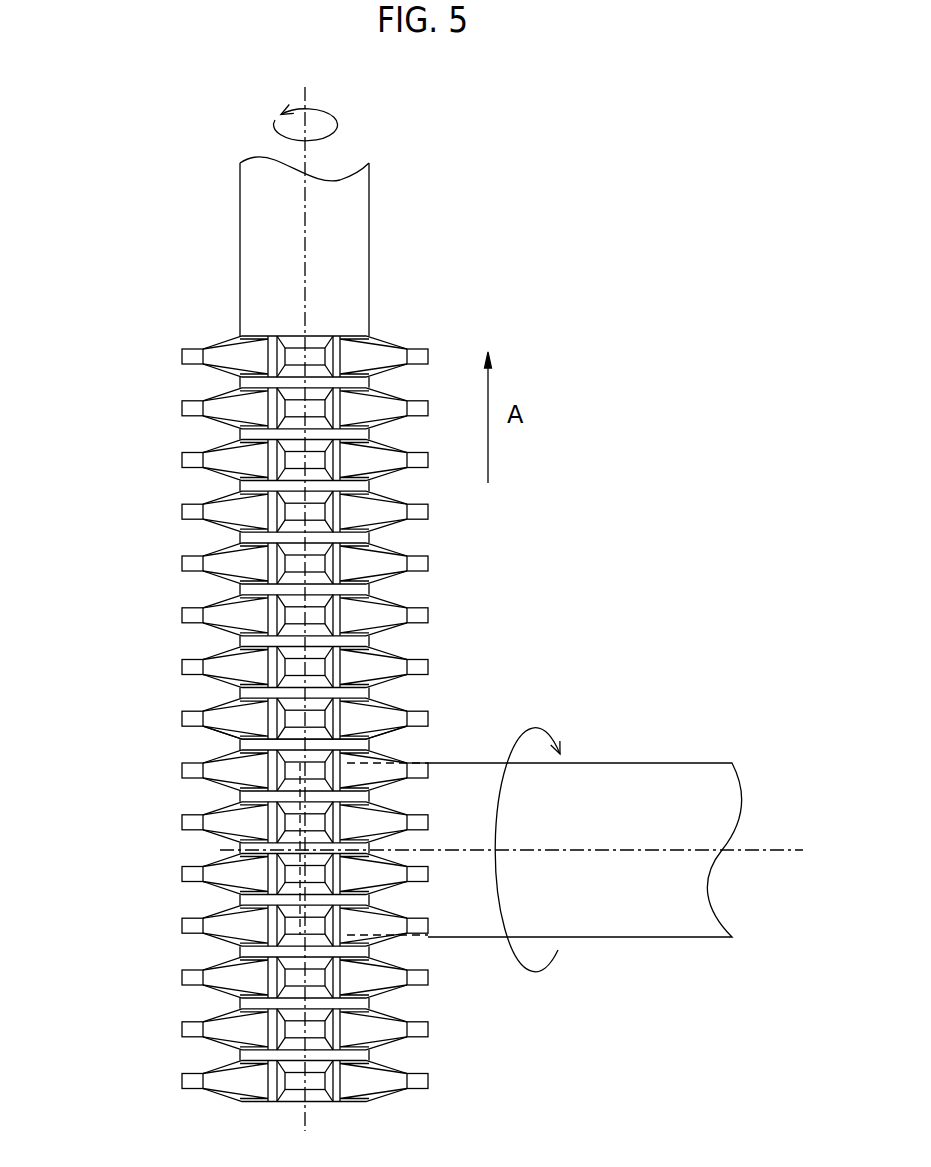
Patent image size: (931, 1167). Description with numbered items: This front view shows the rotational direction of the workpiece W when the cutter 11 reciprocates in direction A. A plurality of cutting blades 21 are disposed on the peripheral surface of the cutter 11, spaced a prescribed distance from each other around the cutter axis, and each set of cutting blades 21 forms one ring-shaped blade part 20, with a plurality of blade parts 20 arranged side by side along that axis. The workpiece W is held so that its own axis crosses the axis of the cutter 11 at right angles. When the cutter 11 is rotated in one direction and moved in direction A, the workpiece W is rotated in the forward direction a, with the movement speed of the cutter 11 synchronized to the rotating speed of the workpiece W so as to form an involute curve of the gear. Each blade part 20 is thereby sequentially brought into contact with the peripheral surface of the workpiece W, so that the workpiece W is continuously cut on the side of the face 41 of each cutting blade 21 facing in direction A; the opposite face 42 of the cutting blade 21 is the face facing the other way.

The cutter 11 is at (260, 593).
The blade part 20 is at (287, 699).
The cutting blade 21 is at (430, 357).
The face of the cutting blade 41 is at (217, 702).
The lower cutting edge 42 is at (217, 737).
The workpiece W is at (678, 763).